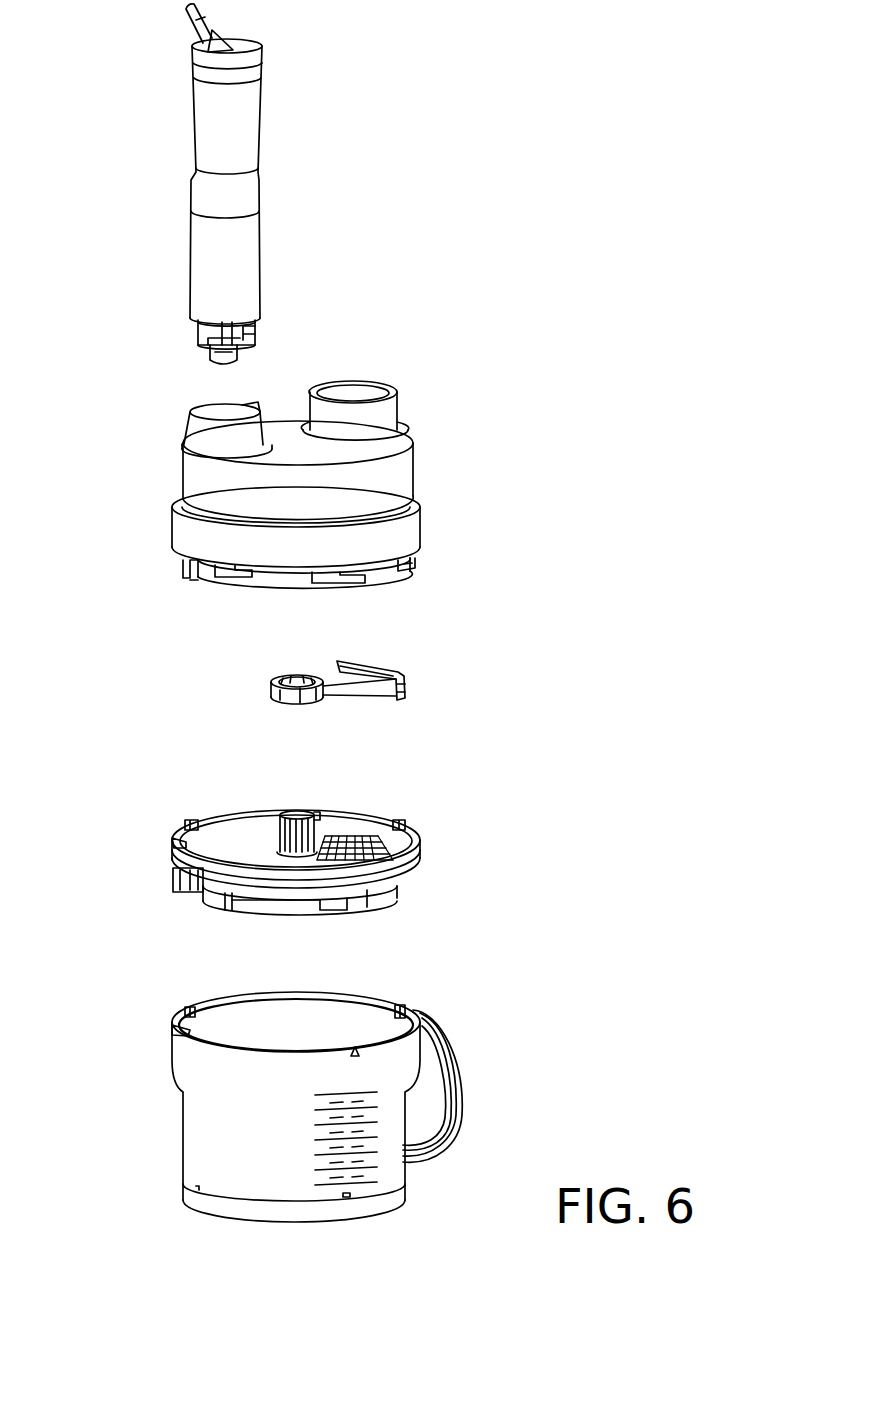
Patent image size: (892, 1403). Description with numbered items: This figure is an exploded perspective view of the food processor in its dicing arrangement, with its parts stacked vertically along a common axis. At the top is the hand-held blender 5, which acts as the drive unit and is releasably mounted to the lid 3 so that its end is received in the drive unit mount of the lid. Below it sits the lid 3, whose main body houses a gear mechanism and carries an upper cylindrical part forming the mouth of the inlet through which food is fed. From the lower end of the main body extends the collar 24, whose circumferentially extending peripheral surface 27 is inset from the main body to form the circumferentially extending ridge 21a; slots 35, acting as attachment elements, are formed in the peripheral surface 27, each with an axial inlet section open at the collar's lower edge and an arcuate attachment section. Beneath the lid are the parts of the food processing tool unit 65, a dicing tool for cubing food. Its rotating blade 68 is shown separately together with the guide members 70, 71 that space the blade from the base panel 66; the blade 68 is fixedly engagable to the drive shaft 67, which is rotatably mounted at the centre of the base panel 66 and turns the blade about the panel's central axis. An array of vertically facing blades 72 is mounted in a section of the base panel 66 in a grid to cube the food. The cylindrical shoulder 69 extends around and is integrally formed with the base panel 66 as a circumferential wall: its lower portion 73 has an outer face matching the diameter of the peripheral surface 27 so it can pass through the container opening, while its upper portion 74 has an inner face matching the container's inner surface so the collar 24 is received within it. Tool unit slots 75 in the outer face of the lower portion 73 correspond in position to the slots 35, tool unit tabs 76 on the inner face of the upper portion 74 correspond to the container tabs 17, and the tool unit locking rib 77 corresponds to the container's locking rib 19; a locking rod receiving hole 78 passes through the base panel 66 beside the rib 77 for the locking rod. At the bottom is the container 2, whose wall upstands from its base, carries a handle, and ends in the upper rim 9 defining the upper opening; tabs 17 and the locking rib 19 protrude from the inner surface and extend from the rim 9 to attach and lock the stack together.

The container 2 is at (293, 1102).
The lid 3 is at (334, 509).
The hand-held blender 5 is at (250, 200).
The upper rim 9 is at (200, 1047).
The tabs 17 is at (403, 1007).
The locking rib 19 is at (172, 1027).
The ridge 21a is at (423, 556).
The collar 24 is at (383, 574).
The peripheral surface 27 is at (308, 585).
The slots 35 is at (240, 582).
The food processing tool unit 65 is at (309, 923).
The base panel 66 is at (236, 834).
The drive shaft 67 is at (282, 836).
The rotating blade 68 is at (362, 699).
The cylindrical shoulder 69 is at (268, 898).
The guide member 70 is at (270, 690).
The guide member 71 is at (409, 690).
The vertically facing blades 72 is at (340, 836).
The lower portion 73 is at (225, 900).
The upper portion 74 is at (415, 850).
The tool unit slots 75 is at (358, 896).
The tool unit tabs 76 is at (196, 819).
The tool unit locking rib 77 is at (172, 841).
The locking rod receiving hole 78 is at (173, 877).